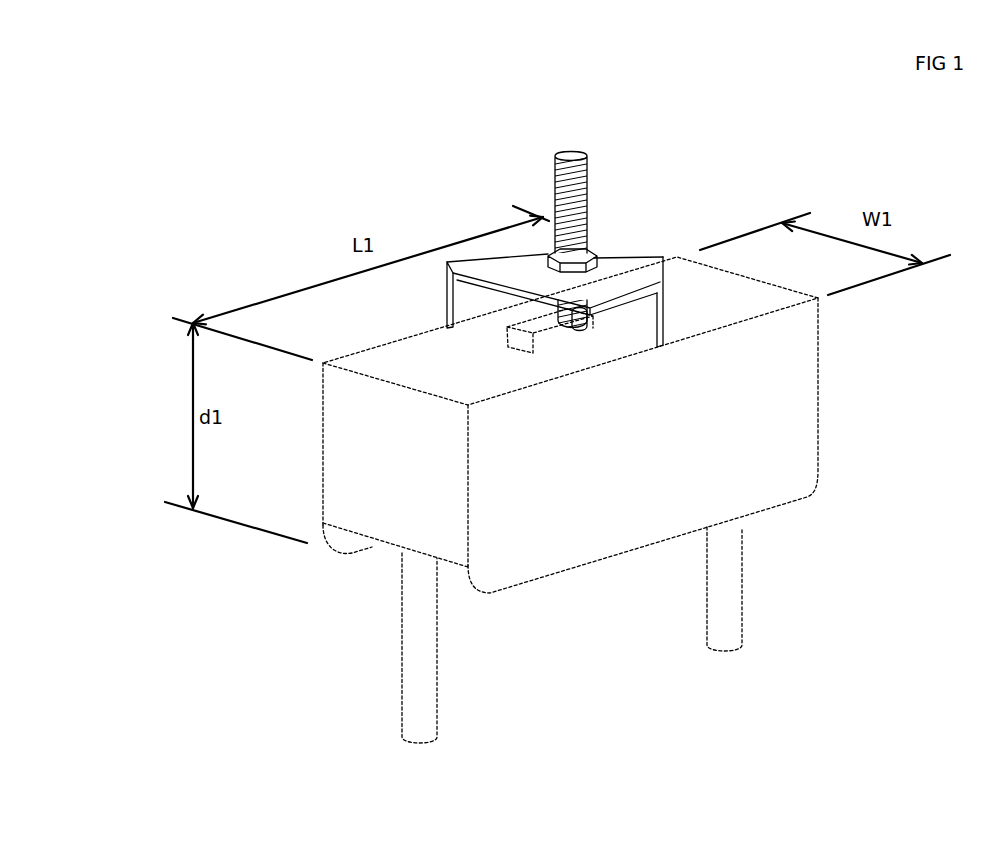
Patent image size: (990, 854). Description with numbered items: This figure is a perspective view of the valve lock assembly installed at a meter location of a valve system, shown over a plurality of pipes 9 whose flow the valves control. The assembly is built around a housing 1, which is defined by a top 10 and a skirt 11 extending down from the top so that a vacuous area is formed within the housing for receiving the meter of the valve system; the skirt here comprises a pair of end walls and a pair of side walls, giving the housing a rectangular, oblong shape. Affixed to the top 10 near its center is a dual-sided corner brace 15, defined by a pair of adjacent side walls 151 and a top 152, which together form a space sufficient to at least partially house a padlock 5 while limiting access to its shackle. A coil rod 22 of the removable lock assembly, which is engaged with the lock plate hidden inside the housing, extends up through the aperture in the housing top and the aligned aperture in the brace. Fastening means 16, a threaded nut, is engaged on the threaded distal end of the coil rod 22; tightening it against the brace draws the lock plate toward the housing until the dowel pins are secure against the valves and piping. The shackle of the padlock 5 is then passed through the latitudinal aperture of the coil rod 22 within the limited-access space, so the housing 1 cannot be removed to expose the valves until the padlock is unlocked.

The housing 1 is at (610, 453).
The padlock 5 is at (547, 337).
The pipes 9 is at (417, 705).
The top 10 is at (777, 302).
The skirt 11 is at (382, 488).
The dual-sided corner brace 15 is at (541, 227).
The fastening means 16 is at (580, 263).
The coil rod 22 is at (571, 152).
The side walls 151 is at (482, 303).
The top 152 is at (497, 262).